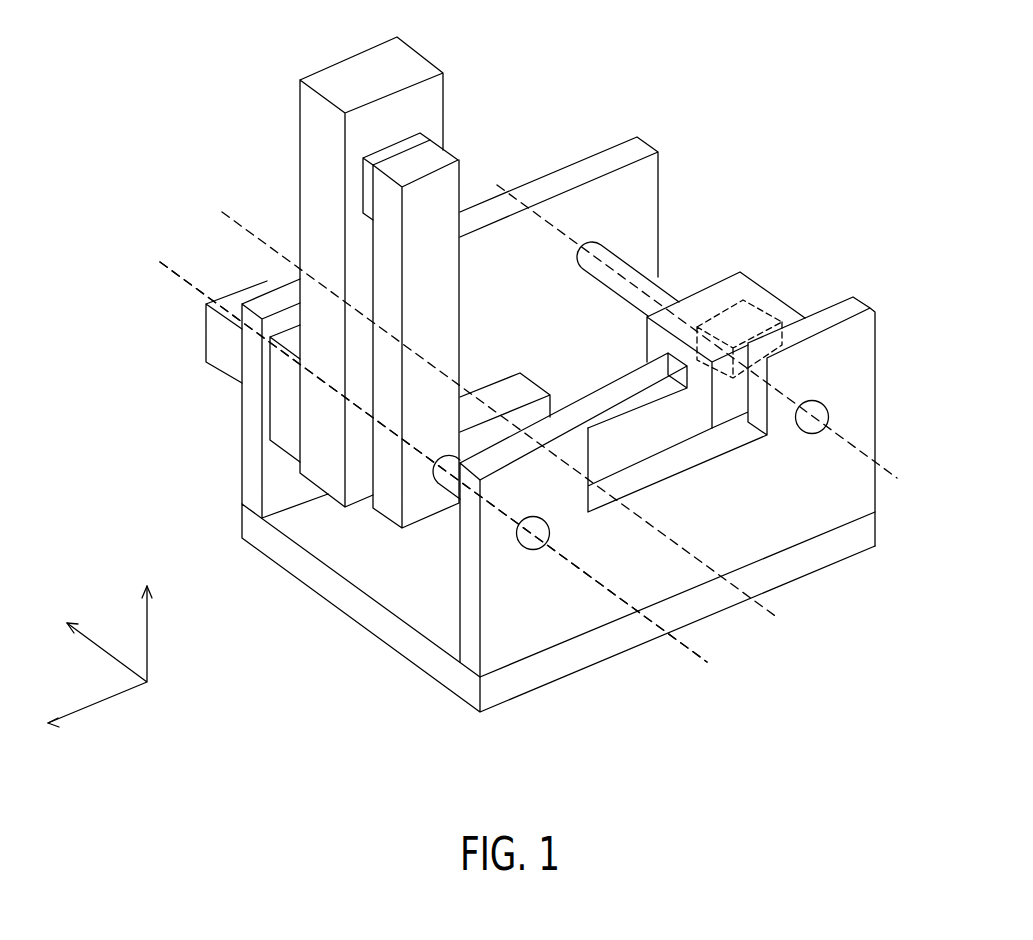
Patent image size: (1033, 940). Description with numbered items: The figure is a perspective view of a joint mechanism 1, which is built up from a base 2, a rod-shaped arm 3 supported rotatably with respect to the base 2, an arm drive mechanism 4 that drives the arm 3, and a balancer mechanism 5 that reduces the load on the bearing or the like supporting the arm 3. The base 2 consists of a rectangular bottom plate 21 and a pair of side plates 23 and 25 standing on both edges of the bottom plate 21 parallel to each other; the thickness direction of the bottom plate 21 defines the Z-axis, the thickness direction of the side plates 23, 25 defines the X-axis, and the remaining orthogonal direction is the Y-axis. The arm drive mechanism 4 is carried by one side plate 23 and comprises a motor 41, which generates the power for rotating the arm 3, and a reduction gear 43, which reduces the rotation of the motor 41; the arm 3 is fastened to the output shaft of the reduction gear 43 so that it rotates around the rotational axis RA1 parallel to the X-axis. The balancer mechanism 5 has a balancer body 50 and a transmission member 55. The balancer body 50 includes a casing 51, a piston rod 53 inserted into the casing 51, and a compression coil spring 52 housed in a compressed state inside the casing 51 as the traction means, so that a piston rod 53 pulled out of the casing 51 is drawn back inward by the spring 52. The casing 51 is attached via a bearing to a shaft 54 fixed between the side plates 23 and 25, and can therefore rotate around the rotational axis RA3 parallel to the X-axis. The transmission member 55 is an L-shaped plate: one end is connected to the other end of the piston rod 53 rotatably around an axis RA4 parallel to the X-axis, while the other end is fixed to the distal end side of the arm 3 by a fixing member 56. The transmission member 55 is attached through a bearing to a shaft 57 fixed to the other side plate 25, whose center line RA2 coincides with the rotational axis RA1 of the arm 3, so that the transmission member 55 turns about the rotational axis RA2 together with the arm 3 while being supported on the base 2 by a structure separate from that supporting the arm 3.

The joint mechanism 1 is at (750, 147).
The base 2 is at (330, 603).
The bottom plate 21 is at (293, 572).
The side plate 23 is at (247, 459).
The side plate 25 is at (470, 618).
The arm 3 is at (368, 77).
The arm drive mechanism 4 is at (102, 316).
The motor 41 is at (225, 350).
The reduction gear 43 is at (287, 424).
The balancer mechanism 5 is at (470, 297).
The balancer body 50 is at (790, 307).
The casing 51 is at (753, 282).
The compression coil spring 52 is at (733, 320).
The piston rod 53 is at (632, 403).
The shaft 54 is at (633, 268).
The transmission member 55 is at (433, 167).
The fixing member 56 is at (405, 143).
The shaft 57 is at (443, 493).
The rotational axis RA1 is at (460, 478).
The rotational axis RA2 is at (433, 462).
The rotational axis RA3 is at (721, 343).
The axis RA4 is at (523, 433).